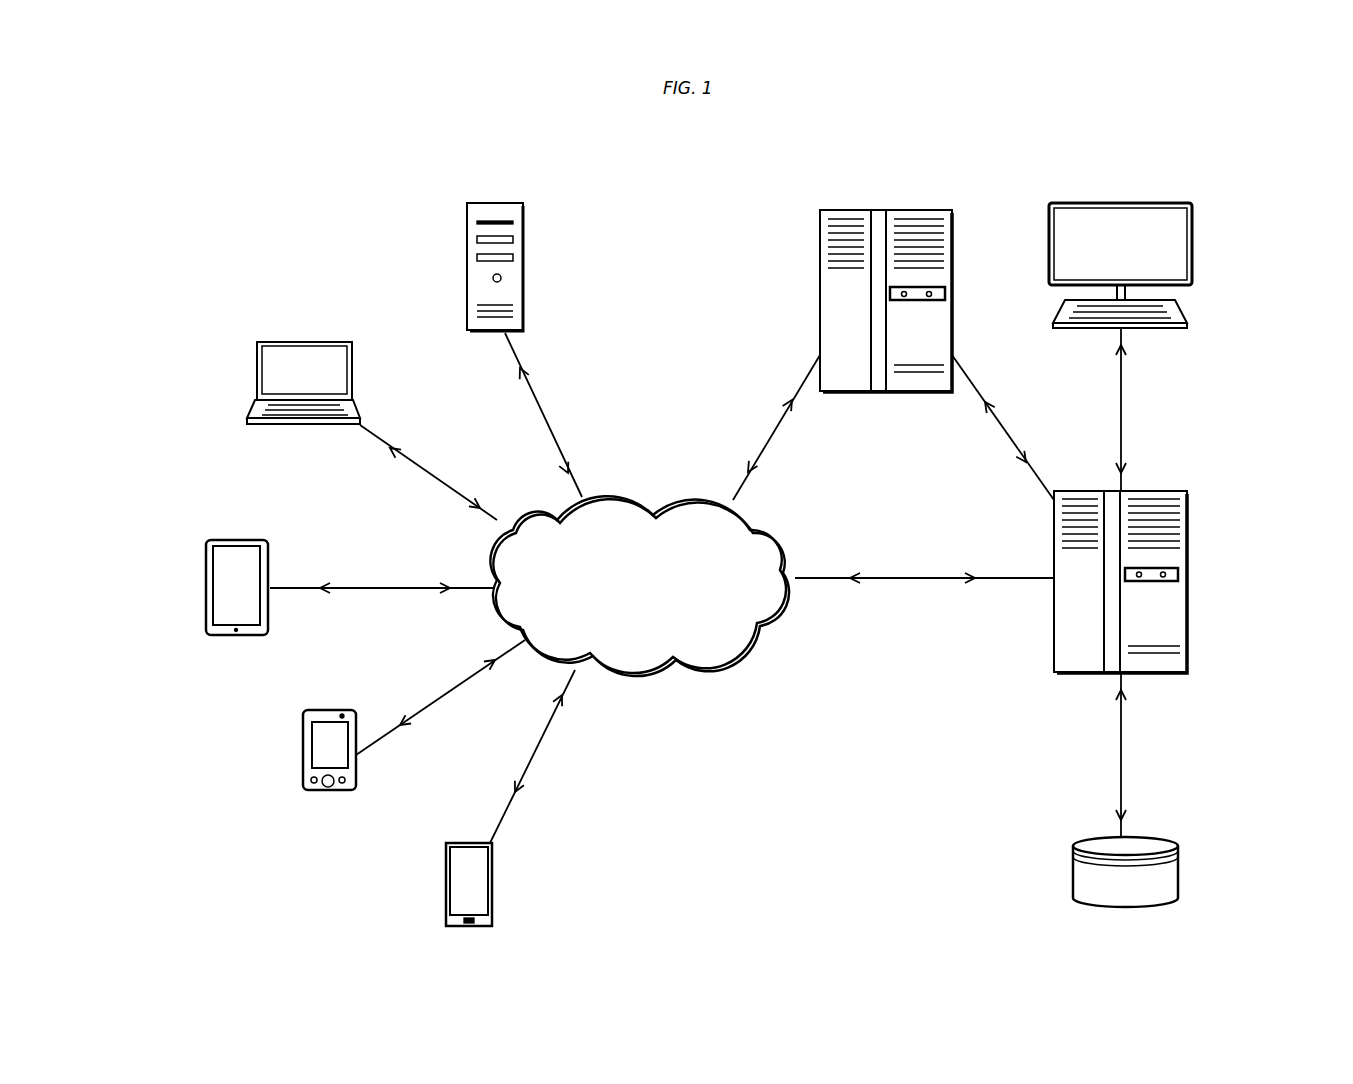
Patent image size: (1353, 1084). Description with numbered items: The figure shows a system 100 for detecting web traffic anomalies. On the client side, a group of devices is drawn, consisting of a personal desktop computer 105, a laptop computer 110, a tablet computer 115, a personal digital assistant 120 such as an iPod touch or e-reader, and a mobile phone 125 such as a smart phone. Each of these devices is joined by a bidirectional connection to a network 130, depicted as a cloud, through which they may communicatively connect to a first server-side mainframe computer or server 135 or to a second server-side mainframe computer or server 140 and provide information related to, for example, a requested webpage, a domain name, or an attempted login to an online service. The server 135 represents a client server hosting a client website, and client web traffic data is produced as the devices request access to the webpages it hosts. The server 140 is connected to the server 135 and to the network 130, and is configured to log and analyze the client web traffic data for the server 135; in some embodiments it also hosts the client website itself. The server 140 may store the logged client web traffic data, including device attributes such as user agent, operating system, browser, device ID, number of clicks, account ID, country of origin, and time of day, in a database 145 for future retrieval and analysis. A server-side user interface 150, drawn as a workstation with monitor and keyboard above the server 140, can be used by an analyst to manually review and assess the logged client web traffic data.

The system 100 is at (224, 181).
The desktop computer 105 is at (465, 262).
The laptop computer 110 is at (258, 370).
The tablet computer 115 is at (205, 585).
The personal digital assistant 120 is at (302, 737).
The mobile phone 125 is at (445, 885).
The network 130 is at (720, 662).
The first server-side mainframe computer or server 135 is at (818, 282).
The second server-side mainframe computer or server 140 is at (1190, 578).
The database 145 is at (1178, 866).
The server-side user interface 150 is at (1193, 240).